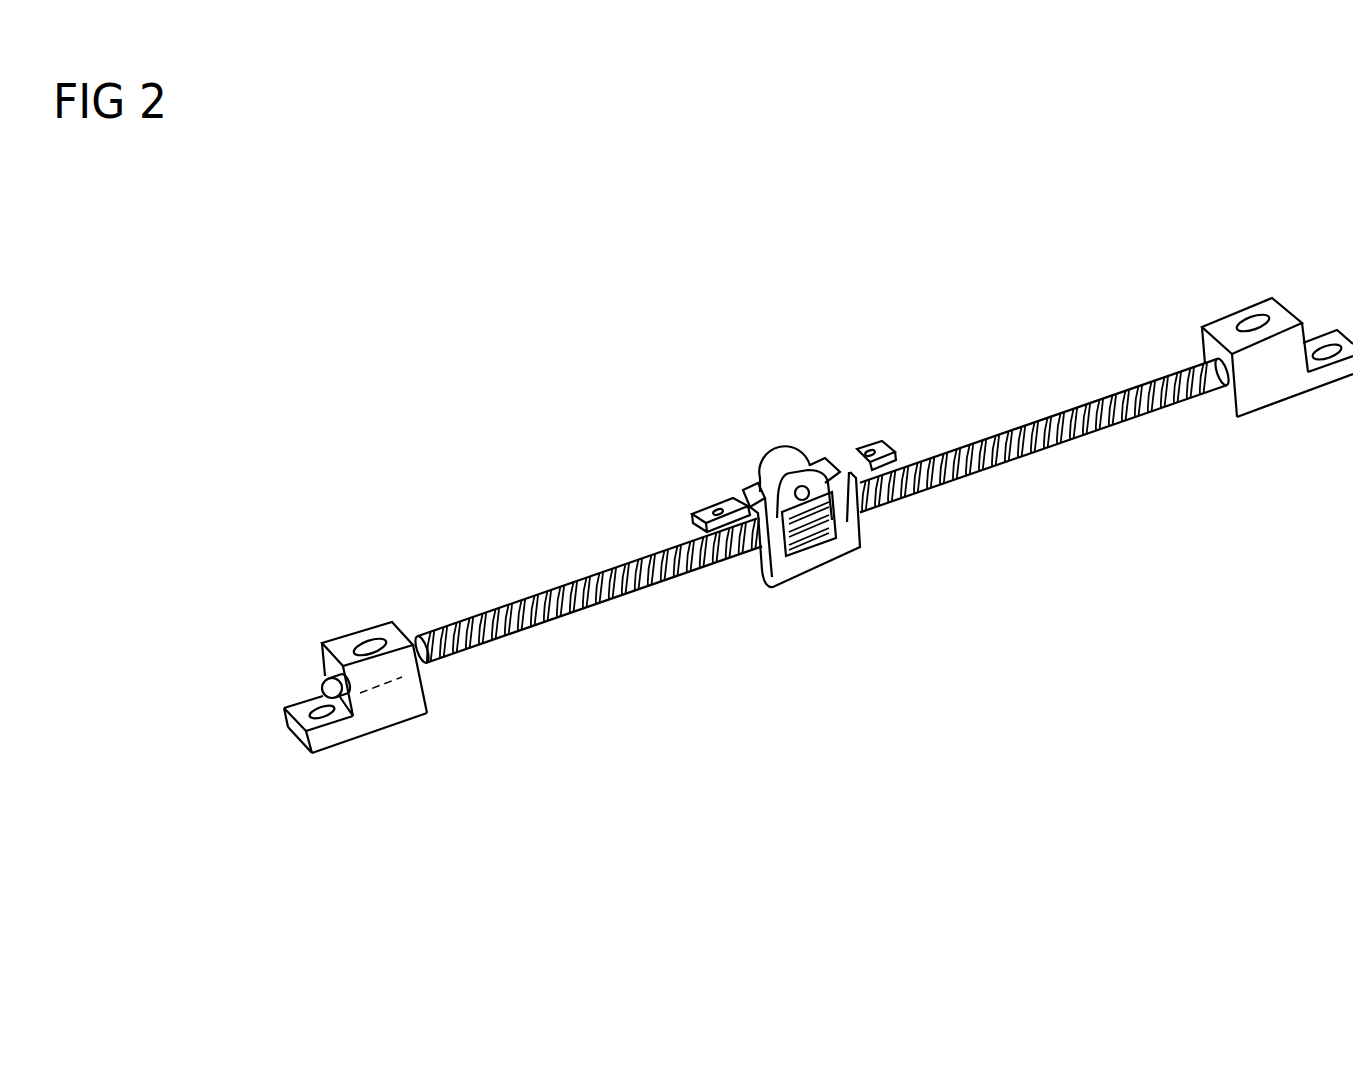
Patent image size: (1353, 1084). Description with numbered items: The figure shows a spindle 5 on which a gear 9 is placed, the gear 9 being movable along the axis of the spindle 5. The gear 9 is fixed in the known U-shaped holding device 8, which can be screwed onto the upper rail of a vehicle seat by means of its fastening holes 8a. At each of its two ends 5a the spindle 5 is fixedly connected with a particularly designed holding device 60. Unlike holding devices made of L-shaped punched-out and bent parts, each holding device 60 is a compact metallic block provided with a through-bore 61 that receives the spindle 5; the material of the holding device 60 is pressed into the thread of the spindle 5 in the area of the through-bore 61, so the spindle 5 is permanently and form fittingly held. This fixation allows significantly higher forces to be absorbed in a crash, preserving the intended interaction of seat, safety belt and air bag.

The spindle 5 is at (547, 592).
The spindle ends 5a is at (440, 690).
The U-shaped holding device 8 is at (698, 512).
The fastening holes 8a is at (870, 450).
The gear 9 is at (780, 551).
The holding device 60 is at (393, 622).
The through-bore 61 is at (403, 672).